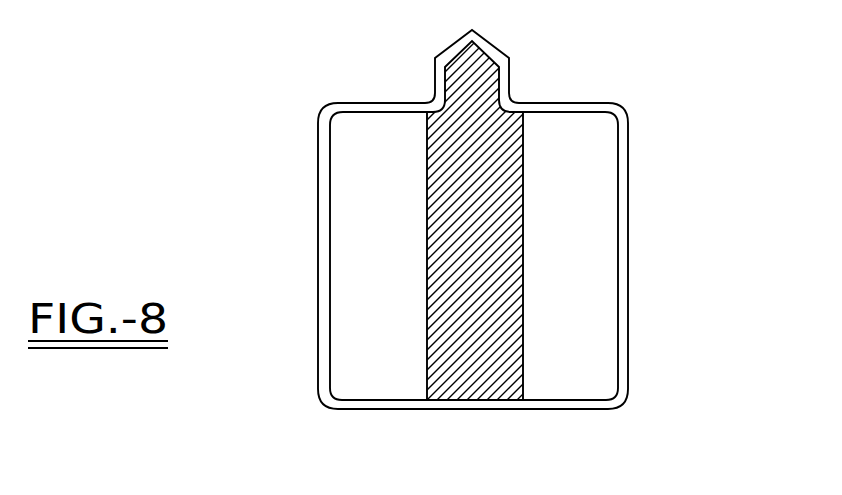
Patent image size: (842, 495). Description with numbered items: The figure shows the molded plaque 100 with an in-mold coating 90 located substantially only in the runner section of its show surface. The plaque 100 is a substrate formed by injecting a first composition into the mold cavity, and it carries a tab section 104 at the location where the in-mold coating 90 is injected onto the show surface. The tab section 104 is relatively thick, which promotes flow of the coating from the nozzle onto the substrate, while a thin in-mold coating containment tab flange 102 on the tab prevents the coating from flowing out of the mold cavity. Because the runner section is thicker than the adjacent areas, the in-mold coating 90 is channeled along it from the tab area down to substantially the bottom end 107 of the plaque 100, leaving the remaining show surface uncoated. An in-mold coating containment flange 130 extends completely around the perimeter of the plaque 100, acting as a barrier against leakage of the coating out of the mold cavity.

The plaque 100 is at (311, 86).
The tab flange 102 is at (440, 53).
The tab section 104 is at (492, 65).
The in-mold coating 90 is at (508, 178).
The containment flange 130 is at (628, 297).
The bottom end 107 is at (493, 400).